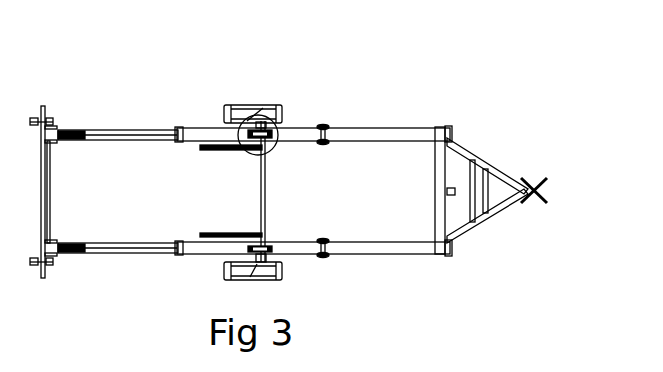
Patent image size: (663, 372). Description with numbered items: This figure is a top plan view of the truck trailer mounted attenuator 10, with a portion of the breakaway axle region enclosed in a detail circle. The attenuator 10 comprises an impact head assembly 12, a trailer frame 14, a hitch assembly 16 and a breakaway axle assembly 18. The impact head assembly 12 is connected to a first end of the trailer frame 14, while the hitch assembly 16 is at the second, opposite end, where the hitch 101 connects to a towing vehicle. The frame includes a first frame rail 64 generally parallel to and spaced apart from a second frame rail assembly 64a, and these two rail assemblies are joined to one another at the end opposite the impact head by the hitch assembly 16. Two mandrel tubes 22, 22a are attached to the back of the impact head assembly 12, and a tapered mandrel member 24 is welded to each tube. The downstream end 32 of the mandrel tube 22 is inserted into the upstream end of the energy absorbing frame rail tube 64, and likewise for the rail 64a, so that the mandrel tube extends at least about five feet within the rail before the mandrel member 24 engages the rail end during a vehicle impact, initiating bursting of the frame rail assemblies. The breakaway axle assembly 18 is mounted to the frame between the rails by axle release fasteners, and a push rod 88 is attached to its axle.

The truck trailer mounted attenuator 10 is at (399, 101).
The impact head assembly 12 is at (43, 104).
The trailer frame 14 is at (373, 258).
The hitch assembly 16 is at (501, 222).
The breakaway axle assembly 18 is at (272, 148).
The mandrel tube 22 is at (150, 128).
The mandrel tube 22a is at (119, 256).
The tapered mandrel member 24 is at (60, 130).
The downstream end of the mandrel tube 32 is at (180, 128).
The first frame rail 64 is at (190, 130).
The second frame rail assembly 64a is at (213, 252).
The push rod 88 is at (216, 152).
The hitch 101 is at (524, 181).